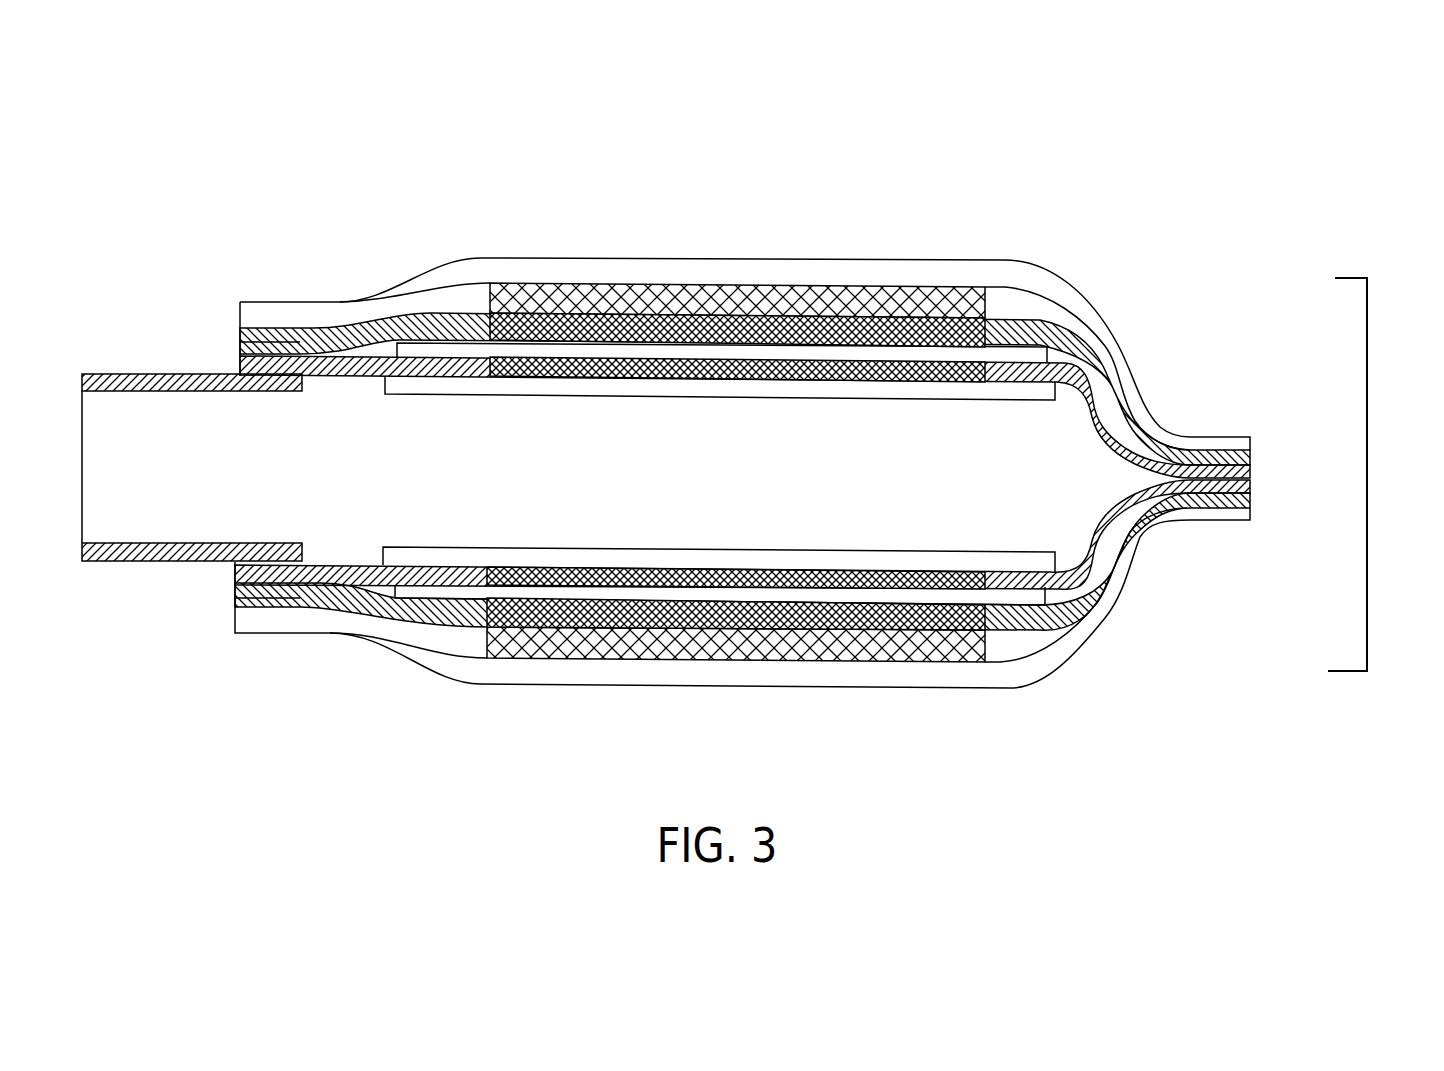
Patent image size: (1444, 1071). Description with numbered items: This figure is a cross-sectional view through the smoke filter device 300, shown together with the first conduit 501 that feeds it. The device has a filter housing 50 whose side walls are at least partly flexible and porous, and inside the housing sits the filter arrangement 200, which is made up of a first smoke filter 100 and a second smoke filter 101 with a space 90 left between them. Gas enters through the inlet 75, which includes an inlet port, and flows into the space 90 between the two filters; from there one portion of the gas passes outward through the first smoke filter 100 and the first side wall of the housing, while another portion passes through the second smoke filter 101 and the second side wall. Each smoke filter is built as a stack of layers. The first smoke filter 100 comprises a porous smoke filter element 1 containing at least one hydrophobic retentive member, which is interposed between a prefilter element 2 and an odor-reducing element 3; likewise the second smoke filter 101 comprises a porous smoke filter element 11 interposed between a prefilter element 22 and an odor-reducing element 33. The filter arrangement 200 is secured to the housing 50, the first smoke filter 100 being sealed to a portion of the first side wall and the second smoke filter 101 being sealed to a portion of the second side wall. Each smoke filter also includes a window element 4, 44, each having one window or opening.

The smoke filter device 300 is at (1196, 89).
The filter arrangement 200 is at (1377, 474).
The filter housing 50 is at (1000, 270).
The window element 44 is at (350, 322).
The window element 4 is at (270, 607).
The first conduit 501 is at (155, 375).
The inlet 75 is at (235, 475).
The space 90 is at (460, 485).
The porous smoke filter element 11 is at (775, 355).
The porous smoke filter element 1 is at (447, 595).
The prefilter element 22 is at (903, 392).
The prefilter element 2 is at (855, 555).
The odor-reducing element 33 is at (632, 300).
The odor-reducing element 3 is at (622, 648).
The second smoke filter 101 is at (572, 303).
The first smoke filter 100 is at (1093, 602).